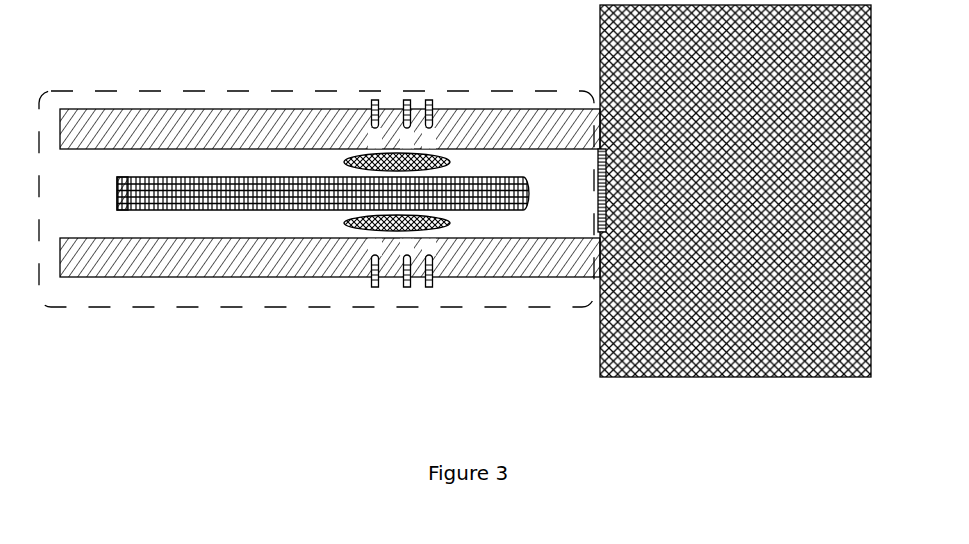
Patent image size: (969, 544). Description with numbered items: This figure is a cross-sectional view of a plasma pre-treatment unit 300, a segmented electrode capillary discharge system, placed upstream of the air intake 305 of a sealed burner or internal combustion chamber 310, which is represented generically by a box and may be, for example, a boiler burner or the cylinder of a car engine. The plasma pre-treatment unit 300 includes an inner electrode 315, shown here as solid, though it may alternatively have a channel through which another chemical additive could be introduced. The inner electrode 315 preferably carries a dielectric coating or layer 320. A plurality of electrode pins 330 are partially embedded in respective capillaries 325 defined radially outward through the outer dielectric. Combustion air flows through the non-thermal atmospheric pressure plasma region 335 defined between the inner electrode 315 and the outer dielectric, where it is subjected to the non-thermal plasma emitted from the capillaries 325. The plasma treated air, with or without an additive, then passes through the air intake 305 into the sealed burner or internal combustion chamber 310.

The plasma pre-treatment unit 300 is at (131, 308).
The air intake 305 is at (600, 211).
The sealed burner/internal combustion chamber 310 is at (734, 378).
The inner electrode 315 is at (225, 188).
The dielectric coating or layer 320 is at (317, 115).
The capillaries 325 is at (435, 143).
The electrode pins 330 is at (427, 93).
The non-thermal atmospheric pressure plasma region 335 is at (434, 214).